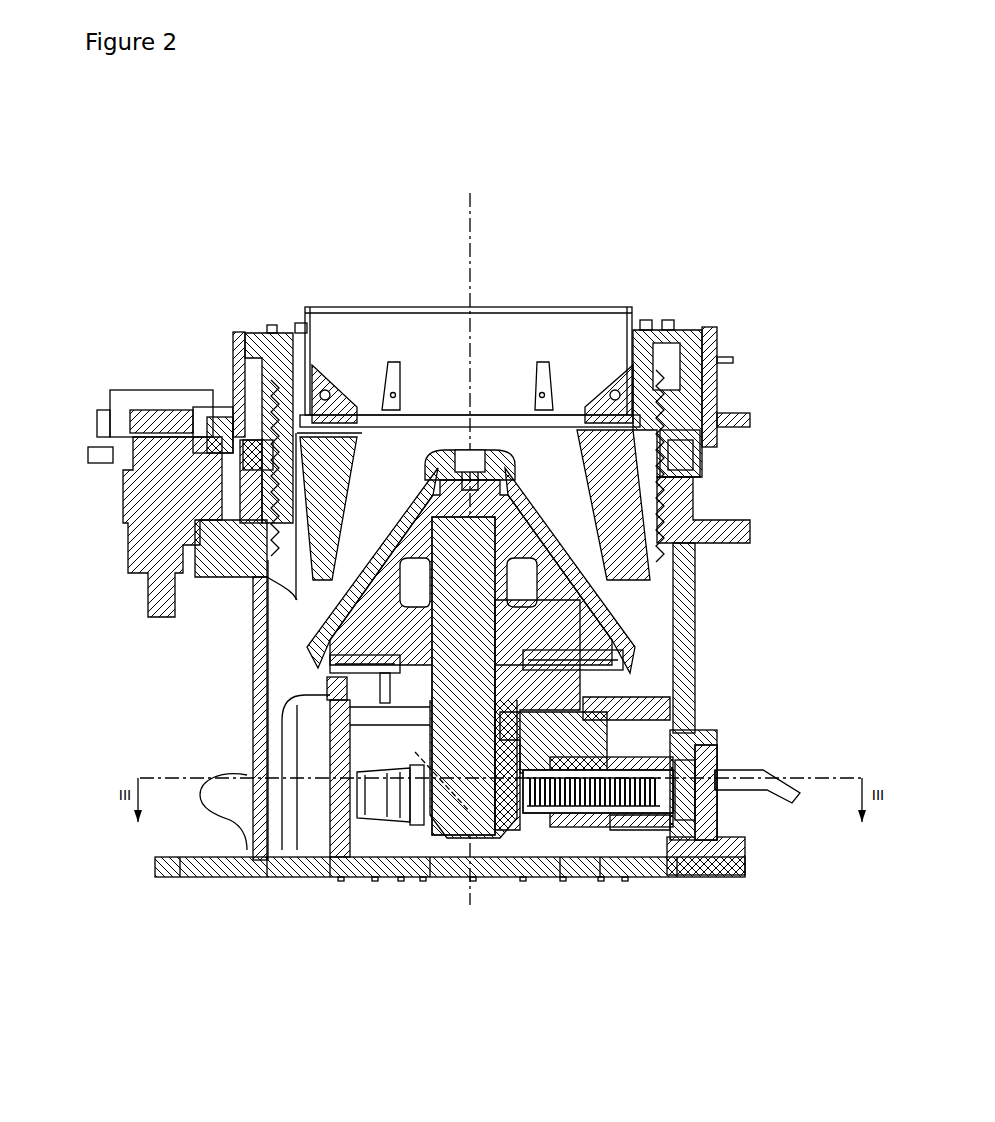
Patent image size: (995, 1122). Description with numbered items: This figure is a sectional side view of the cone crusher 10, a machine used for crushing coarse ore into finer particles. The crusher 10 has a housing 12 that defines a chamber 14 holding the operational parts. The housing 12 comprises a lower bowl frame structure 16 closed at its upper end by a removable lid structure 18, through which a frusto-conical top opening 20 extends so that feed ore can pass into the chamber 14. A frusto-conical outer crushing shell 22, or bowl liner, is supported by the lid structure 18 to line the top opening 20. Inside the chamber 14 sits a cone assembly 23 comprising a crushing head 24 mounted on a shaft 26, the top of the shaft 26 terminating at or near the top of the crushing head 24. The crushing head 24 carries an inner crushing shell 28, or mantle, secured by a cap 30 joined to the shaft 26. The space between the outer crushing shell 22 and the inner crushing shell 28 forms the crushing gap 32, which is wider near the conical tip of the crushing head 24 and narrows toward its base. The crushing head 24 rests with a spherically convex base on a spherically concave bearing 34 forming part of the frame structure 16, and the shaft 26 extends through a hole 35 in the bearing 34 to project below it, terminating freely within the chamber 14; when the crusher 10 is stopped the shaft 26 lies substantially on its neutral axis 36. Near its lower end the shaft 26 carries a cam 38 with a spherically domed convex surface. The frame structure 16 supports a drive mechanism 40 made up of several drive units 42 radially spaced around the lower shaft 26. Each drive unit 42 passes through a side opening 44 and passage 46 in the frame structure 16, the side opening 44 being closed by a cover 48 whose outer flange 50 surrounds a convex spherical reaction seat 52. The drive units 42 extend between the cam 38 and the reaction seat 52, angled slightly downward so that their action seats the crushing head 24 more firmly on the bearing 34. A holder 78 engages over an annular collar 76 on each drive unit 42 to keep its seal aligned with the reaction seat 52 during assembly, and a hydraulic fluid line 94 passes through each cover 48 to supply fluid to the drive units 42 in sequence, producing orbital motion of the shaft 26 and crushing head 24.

The cone crusher 10 is at (140, 198).
The housing 12 is at (245, 697).
The chamber 14 is at (280, 657).
The lower bowl frame structure 16 is at (258, 632).
The removable lid structure 18 is at (307, 495).
The frusto-conical top opening 20 is at (363, 347).
The outer crushing shell 22 is at (307, 566).
The cone assembly 23 is at (303, 605).
The crushing head 24 is at (580, 620).
The shaft 26 is at (487, 597).
The inner crushing shell 28 is at (640, 530).
The cap 30 is at (503, 463).
The crushing gap 32 is at (348, 540).
The spherical support or bearing 34 is at (573, 660).
The hole 35 is at (605, 722).
The neutral axis 36 is at (470, 215).
The cam 38 is at (524, 705).
The drive mechanism 40 is at (530, 823).
The drive unit 42 is at (618, 818).
The side opening 44 is at (690, 803).
The passage 46 is at (668, 825).
The cover 48 is at (712, 803).
The outer flange 50 is at (718, 835).
The reaction seat 52 is at (685, 808).
The protruding annular collar 76 is at (680, 778).
The holder 78 is at (665, 762).
The hydraulic fluid line 94 is at (208, 796).